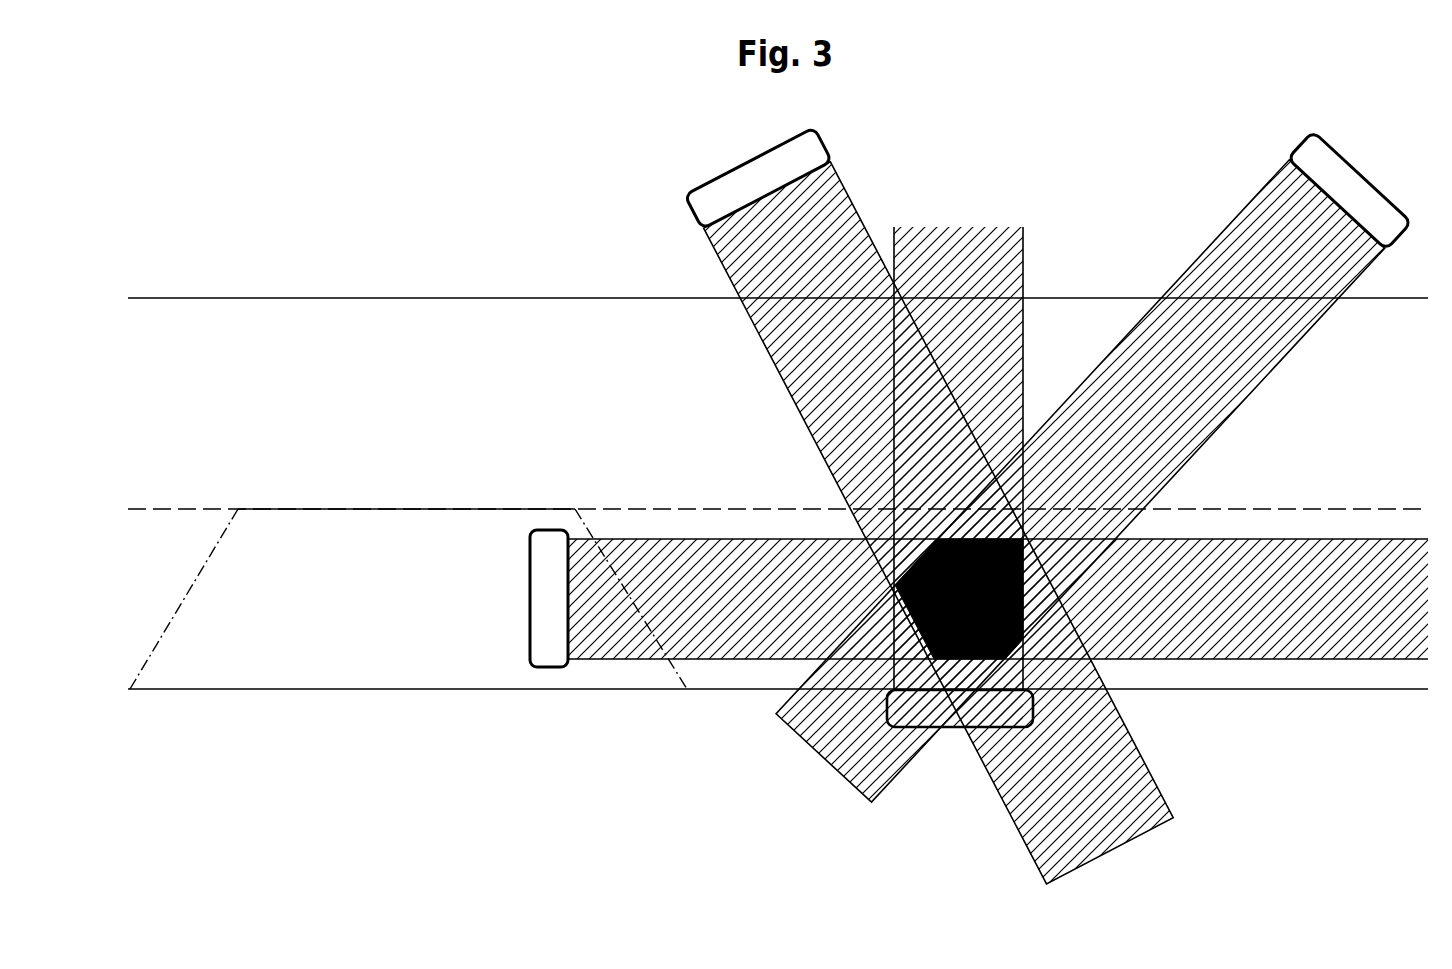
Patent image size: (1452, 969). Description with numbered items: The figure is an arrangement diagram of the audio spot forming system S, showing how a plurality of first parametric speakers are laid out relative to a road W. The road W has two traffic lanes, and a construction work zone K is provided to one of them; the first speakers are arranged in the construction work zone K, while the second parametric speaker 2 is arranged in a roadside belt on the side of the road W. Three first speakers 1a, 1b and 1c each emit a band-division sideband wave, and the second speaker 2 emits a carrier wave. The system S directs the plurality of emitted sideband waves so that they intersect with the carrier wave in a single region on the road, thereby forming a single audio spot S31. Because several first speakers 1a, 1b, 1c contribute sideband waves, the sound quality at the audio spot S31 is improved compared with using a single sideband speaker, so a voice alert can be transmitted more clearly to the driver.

The first parametric speaker 1a is at (545, 603).
The first parametric speaker 1b is at (752, 173).
The first parametric speaker 1c is at (1358, 178).
The second parametric speaker 2 is at (950, 727).
The audio spot S31 is at (1023, 595).
The road W is at (343, 338).
The construction work zone K is at (387, 640).
The audio spot forming system S is at (614, 838).